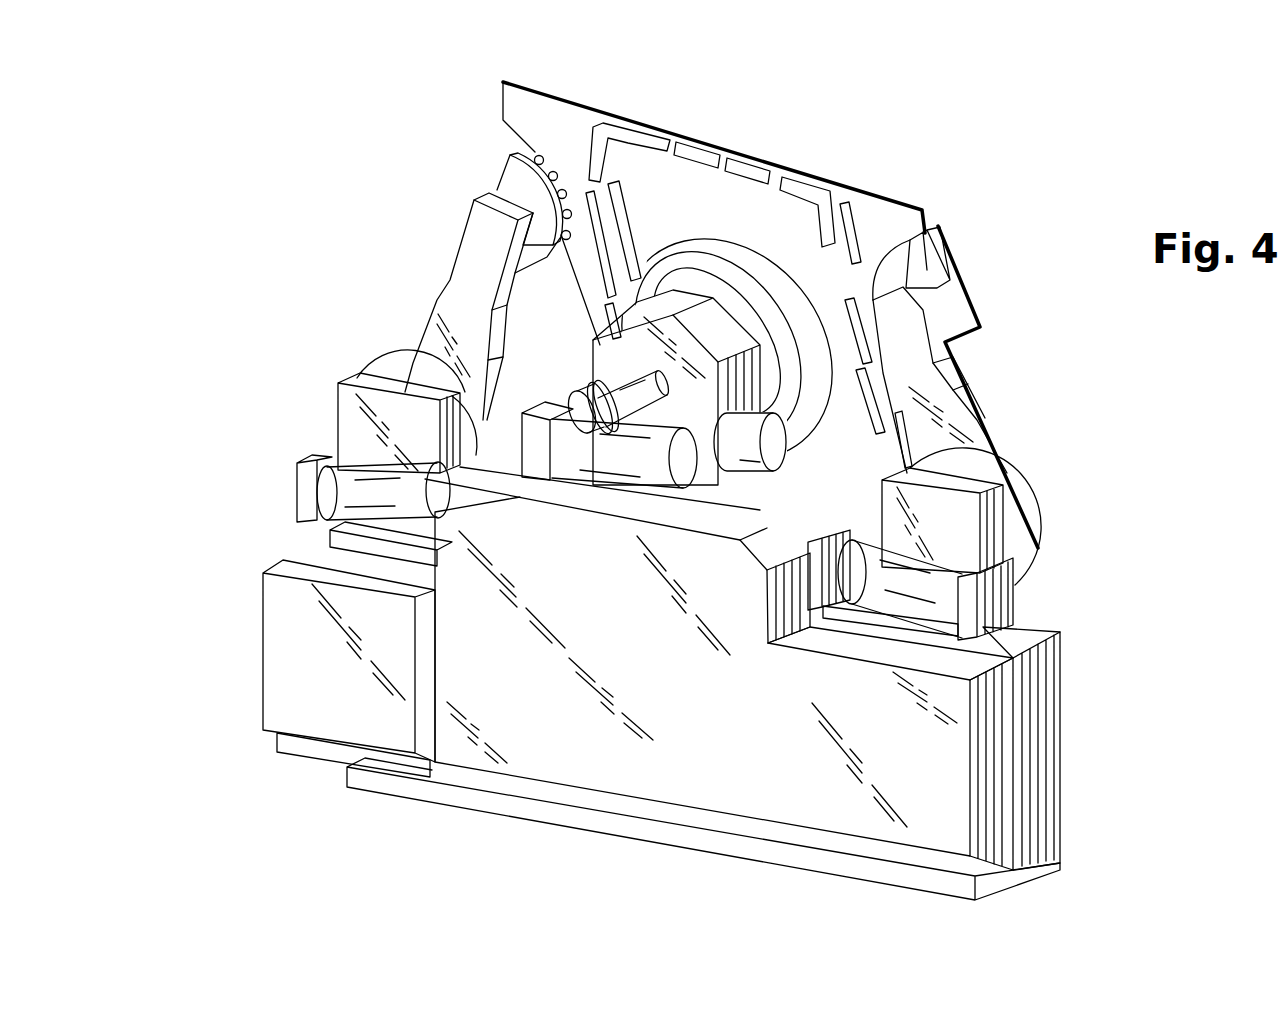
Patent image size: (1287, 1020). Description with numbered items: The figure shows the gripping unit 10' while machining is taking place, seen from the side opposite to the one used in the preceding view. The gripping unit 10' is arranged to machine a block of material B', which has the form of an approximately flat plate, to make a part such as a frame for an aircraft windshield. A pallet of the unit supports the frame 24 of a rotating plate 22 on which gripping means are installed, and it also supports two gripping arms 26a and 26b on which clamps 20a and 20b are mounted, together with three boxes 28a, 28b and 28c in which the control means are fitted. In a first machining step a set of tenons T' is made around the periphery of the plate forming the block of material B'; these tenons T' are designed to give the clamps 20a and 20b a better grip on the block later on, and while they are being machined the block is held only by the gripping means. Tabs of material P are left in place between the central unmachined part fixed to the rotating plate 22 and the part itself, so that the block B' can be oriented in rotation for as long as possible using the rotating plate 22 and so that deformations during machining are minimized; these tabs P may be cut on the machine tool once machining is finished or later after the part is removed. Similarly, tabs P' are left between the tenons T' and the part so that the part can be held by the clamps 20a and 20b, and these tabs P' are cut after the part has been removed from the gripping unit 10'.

The gripping unit 10' is at (643, 470).
The block of material B' is at (770, 294).
The tabs P' is at (749, 254).
The tabs of material P is at (753, 154).
The tenons T' is at (684, 143).
The clamp 20a is at (902, 265).
The clamp 20b is at (507, 178).
The rotating plate 22 is at (757, 287).
The frame 24 is at (613, 363).
The gripping arm 26a is at (947, 400).
The gripping arm 26b is at (455, 283).
The box 28a is at (950, 767).
The box 28b is at (570, 740).
The box 28c is at (302, 683).